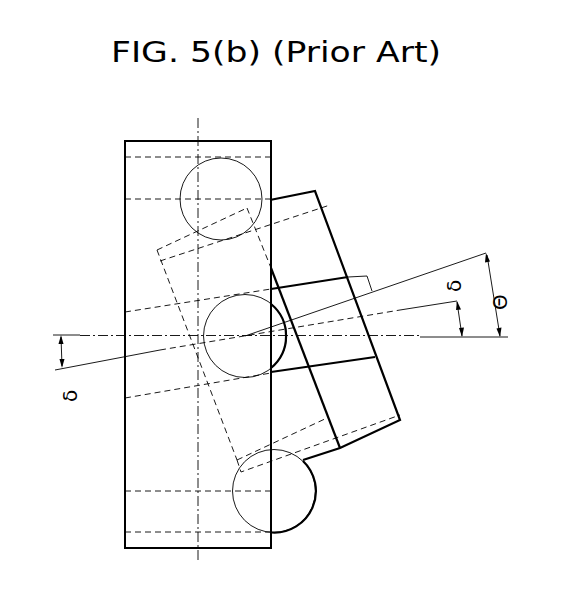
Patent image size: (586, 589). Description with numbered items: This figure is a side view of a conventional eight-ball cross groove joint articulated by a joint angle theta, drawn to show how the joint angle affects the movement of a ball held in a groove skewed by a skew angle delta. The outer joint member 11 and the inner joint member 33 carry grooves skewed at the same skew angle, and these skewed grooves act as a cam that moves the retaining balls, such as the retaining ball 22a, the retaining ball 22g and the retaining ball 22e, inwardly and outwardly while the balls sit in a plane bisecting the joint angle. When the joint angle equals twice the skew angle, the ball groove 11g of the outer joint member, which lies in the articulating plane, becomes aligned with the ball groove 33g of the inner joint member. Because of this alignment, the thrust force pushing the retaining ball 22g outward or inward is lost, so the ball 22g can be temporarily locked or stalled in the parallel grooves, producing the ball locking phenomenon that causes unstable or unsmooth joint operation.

The outer joint member 11 is at (142, 232).
The ball groove of the outer joint member 11g is at (155, 323).
The retaining ball 22a is at (232, 182).
The inner joint member 33 is at (295, 237).
The ball groove of the inner joint member 33g is at (317, 297).
The retaining ball 22g is at (253, 357).
The retaining ball 22e is at (285, 490).